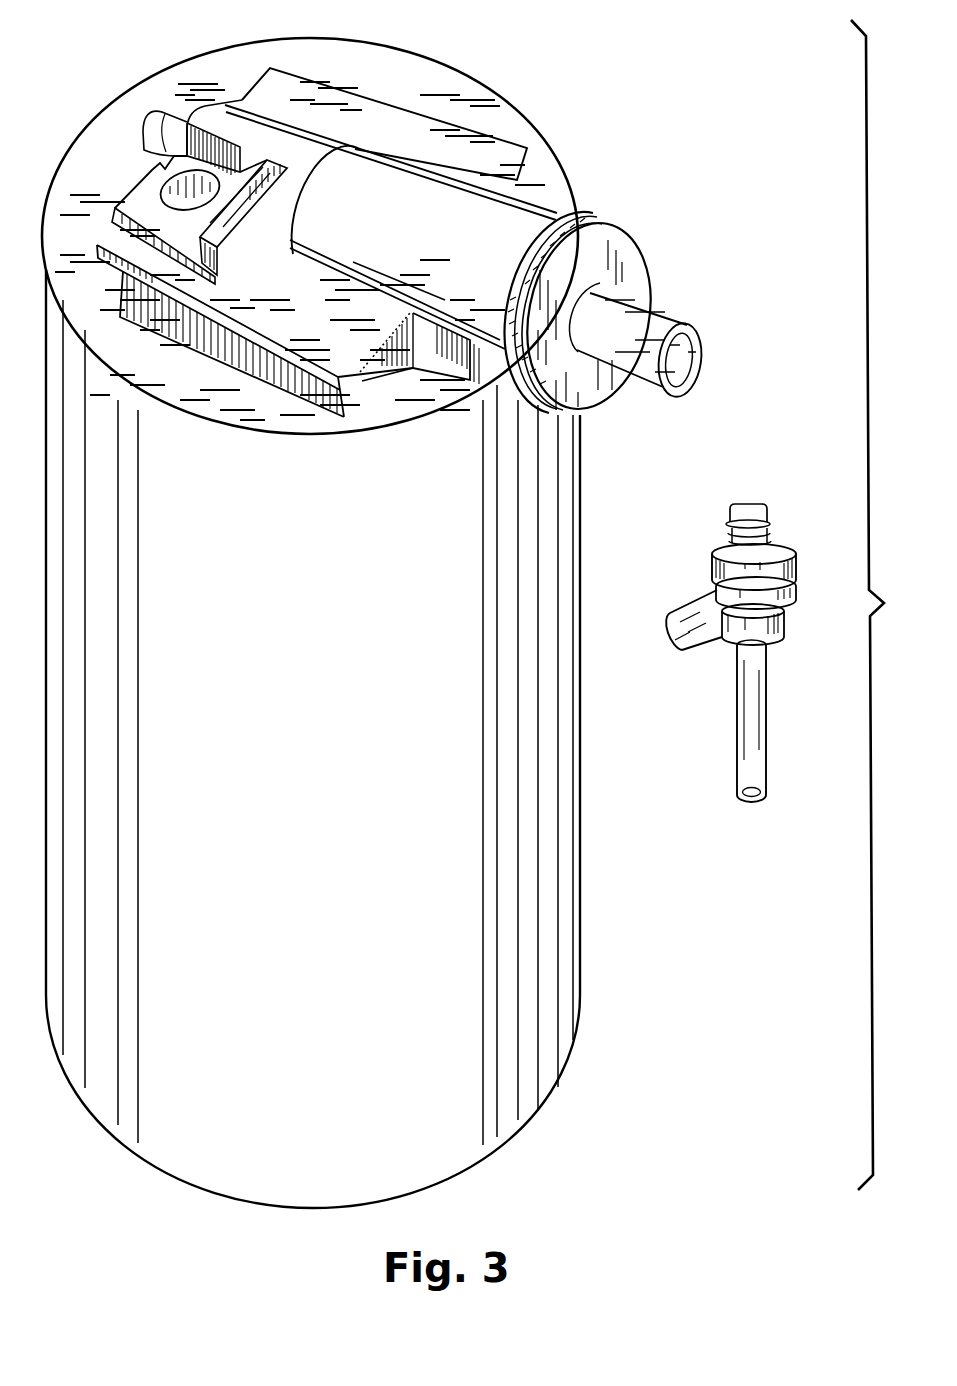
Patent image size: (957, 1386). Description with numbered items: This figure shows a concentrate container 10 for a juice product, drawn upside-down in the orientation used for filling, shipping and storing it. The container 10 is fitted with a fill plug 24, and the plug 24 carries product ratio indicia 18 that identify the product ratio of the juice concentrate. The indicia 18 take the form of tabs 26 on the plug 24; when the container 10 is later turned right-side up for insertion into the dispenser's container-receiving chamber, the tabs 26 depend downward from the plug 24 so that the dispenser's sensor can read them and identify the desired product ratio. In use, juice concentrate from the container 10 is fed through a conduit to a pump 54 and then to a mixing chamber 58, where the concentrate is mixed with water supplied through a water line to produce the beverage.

The concentrate container 10 is at (252, 725).
The product ratio indicia 18 is at (110, 84).
The fill plug 24 is at (140, 203).
The tabs 26 is at (193, 253).
The pump 54 is at (473, 253).
The mixing chamber 58 is at (775, 598).